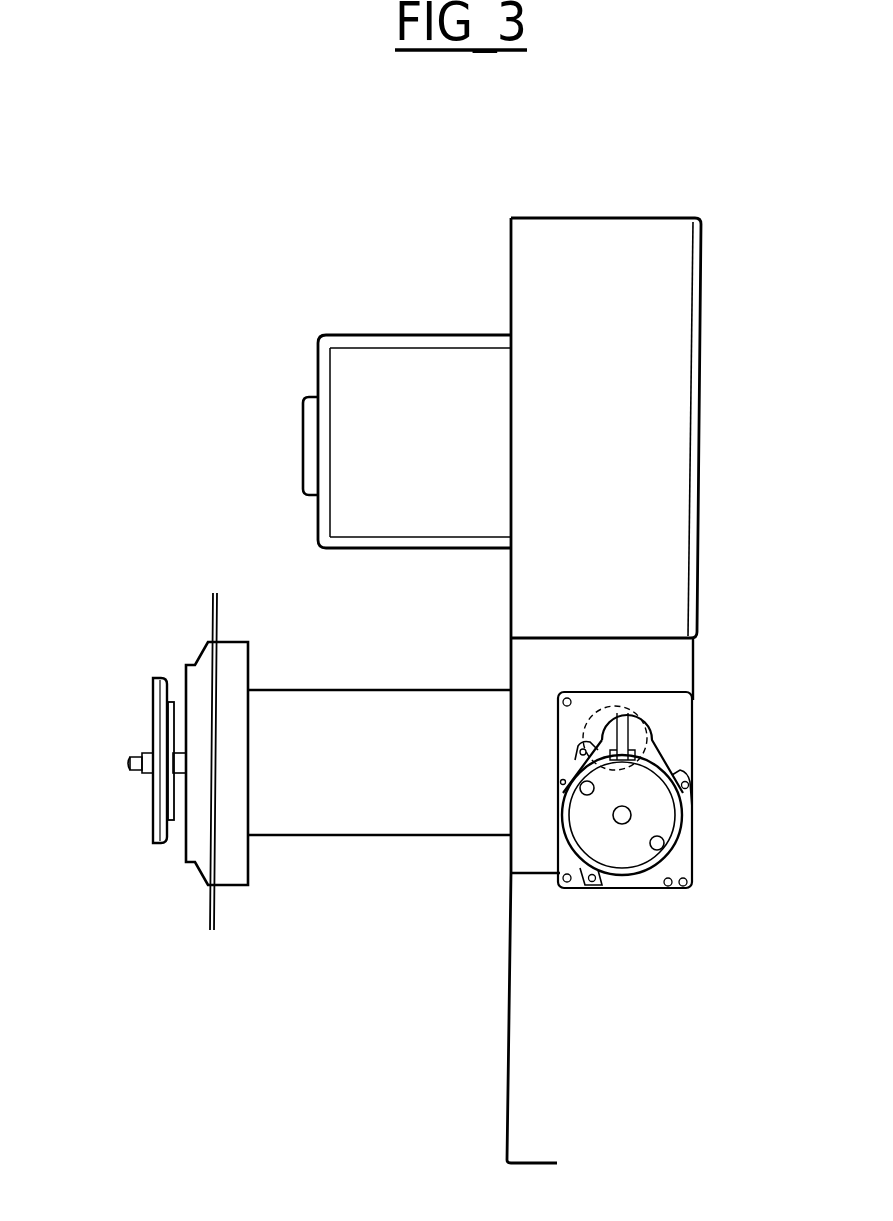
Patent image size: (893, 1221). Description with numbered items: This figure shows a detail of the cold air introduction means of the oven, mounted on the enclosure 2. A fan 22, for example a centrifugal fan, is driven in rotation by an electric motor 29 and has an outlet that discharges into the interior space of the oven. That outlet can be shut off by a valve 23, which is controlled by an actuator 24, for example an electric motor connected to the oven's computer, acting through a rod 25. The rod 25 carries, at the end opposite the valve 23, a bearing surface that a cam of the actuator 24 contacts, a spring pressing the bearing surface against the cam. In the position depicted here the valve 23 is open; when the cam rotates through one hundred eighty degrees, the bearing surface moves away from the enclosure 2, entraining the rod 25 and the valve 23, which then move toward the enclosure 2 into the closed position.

The enclosure 2 is at (217, 610).
The fan 22 is at (701, 338).
The valve 23 is at (152, 830).
The actuator 24 is at (684, 810).
The rod 25 is at (177, 748).
The electric motor 29 is at (348, 346).